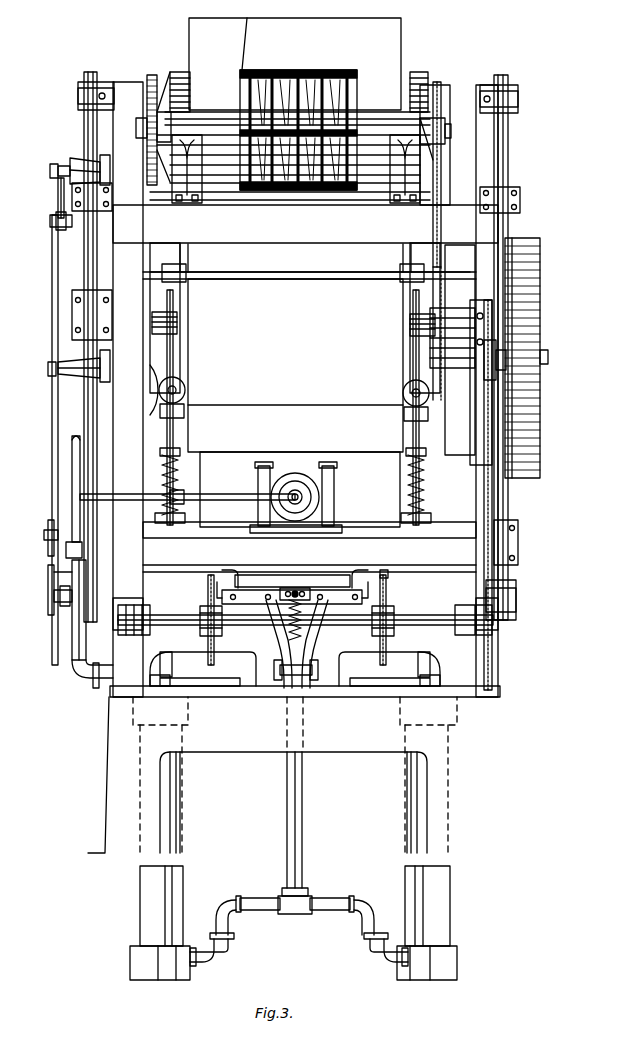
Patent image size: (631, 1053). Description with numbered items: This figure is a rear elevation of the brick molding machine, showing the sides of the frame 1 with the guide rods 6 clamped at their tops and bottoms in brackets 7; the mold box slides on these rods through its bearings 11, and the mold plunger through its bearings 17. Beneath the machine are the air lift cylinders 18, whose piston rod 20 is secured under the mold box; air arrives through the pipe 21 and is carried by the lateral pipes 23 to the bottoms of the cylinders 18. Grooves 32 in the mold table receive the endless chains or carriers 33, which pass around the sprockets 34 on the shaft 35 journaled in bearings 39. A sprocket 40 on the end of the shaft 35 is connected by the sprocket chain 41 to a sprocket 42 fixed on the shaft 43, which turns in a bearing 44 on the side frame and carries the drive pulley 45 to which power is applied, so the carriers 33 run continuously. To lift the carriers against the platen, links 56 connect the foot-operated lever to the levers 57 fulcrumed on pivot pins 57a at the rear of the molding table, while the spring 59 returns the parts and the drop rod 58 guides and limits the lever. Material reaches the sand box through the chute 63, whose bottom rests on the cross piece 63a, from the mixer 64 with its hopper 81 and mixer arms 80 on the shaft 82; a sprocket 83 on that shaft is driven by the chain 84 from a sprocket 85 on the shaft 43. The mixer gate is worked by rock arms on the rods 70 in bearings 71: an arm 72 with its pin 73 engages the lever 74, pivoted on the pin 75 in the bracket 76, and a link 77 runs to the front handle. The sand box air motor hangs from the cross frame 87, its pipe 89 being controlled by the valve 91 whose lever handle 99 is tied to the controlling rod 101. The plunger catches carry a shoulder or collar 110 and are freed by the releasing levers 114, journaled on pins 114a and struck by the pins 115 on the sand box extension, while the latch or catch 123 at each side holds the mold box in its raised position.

The sides of the frame 1 is at (120, 710).
The guide rods 6 is at (85, 132).
The brackets 7 is at (80, 92).
The bearings 11 is at (520, 550).
The bearings 17 is at (73, 192).
The cylinders 18 is at (142, 903).
The piston rod 20 is at (172, 664).
The pipe 21 is at (80, 634).
The lateral pipes 23 is at (262, 912).
The grooves 32 is at (382, 578).
The endless chains or carriers 33 is at (212, 658).
The sprockets 34 is at (210, 608).
The shaft 35 is at (243, 616).
The bearings 39 is at (305, 624).
The sprocket 40 is at (494, 632).
The sprocket chain 41 is at (498, 507).
The sprocket 42 is at (505, 362).
The shaft 43 is at (548, 358).
The bearing 44 is at (465, 340).
The drive pulley 45 is at (530, 311).
The links 56 is at (282, 640).
The levers 57 is at (247, 592).
The pivot pins 57a is at (233, 582).
The drop rod 58 is at (294, 588).
The spring 59 is at (320, 606).
The chute 63 is at (295, 365).
The cross piece 63a is at (304, 412).
The mixer 64 is at (181, 72).
The rods 70 is at (52, 172).
The bearings 71 is at (72, 163).
The arm 72 is at (60, 203).
The pin 73 is at (52, 222).
The lever 74 is at (58, 403).
The pin 75 is at (50, 370).
The bracket 76 is at (80, 368).
The link 77 is at (52, 537).
The mixer arms 80 is at (356, 88).
The hopper 81 is at (402, 35).
The shaft 82 is at (448, 140).
The sprocket 83 is at (442, 100).
The chain 84 is at (440, 166).
The sprocket 85 is at (437, 330).
The cross frame 87 is at (330, 474).
The pipe 89 is at (187, 490).
The valve 91 is at (72, 550).
The lever handle 99 is at (66, 573).
The controlling rod 101 is at (52, 598).
The shoulder or collar 110 is at (183, 254).
The releasing levers 114 is at (172, 362).
The pins 114a is at (177, 323).
The pins 115 is at (180, 480).
The latch or catch 123 is at (183, 388).